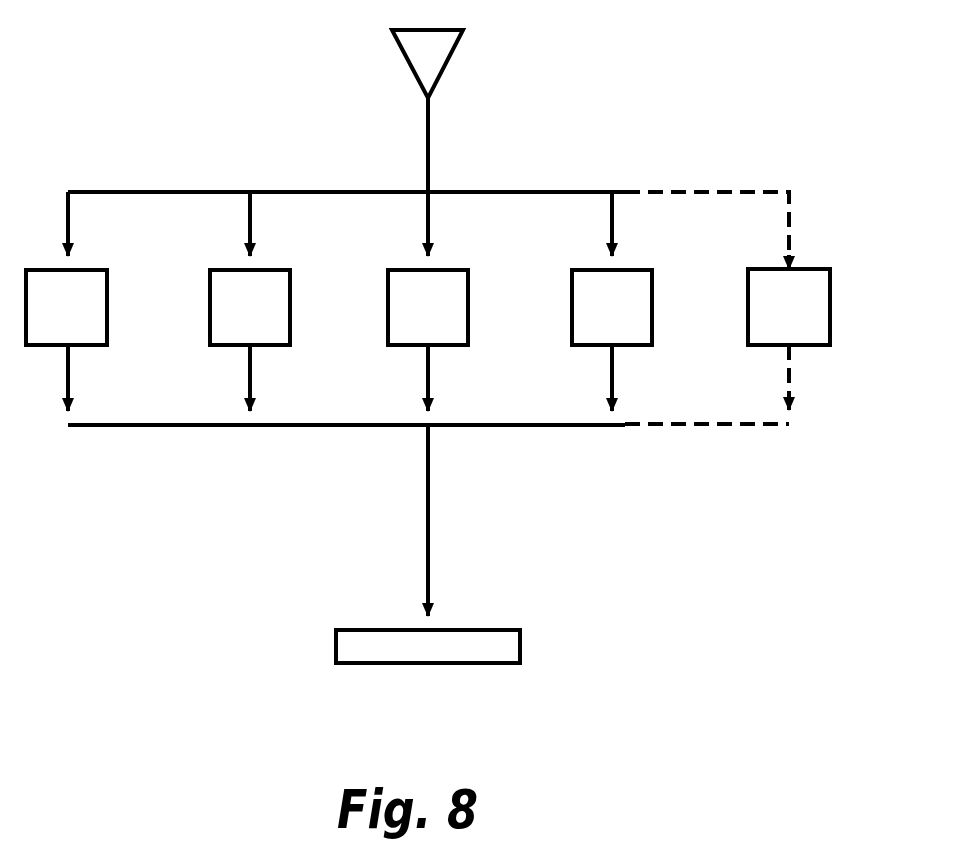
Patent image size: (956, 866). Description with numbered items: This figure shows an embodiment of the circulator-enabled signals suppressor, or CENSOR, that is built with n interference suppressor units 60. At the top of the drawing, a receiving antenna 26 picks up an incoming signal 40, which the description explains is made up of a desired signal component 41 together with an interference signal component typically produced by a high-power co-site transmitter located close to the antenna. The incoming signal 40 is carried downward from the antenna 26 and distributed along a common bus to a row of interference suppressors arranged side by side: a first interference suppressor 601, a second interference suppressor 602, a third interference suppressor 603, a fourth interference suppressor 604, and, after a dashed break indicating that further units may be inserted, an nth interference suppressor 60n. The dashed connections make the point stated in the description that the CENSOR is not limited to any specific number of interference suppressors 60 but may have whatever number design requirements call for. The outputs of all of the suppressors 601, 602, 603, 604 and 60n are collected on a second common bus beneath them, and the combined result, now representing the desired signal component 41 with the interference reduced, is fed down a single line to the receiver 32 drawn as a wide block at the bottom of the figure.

The receiving antenna 26 is at (440, 78).
The incoming signal 40 is at (428, 152).
The interference suppressor 60 is at (459, 286).
The first interference suppressor 601 is at (108, 288).
The second interference suppressor 602 is at (290, 286).
The third interference suppressor 603 is at (468, 288).
The fourth interference suppressor 604 is at (652, 288).
The nth interference suppressor 60n is at (830, 285).
The desired signal component 41 is at (428, 537).
The receiver 32 is at (520, 653).